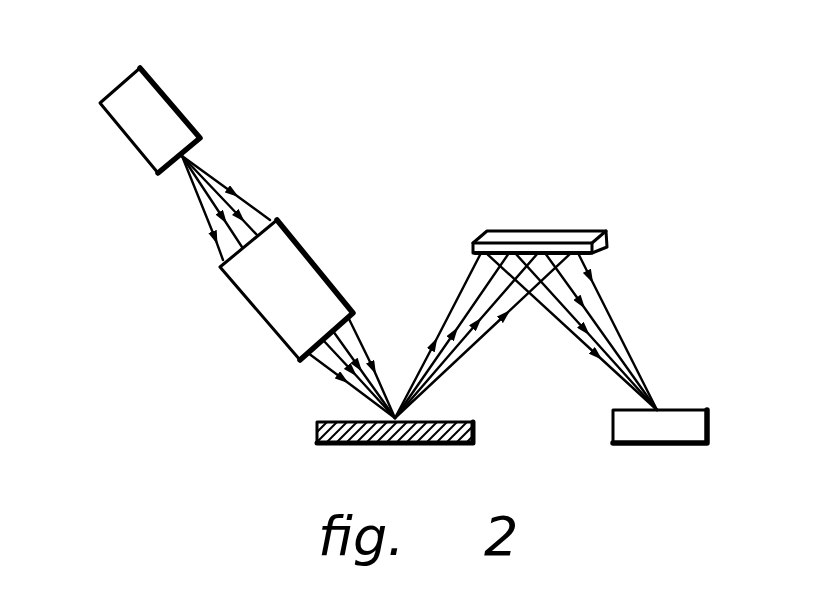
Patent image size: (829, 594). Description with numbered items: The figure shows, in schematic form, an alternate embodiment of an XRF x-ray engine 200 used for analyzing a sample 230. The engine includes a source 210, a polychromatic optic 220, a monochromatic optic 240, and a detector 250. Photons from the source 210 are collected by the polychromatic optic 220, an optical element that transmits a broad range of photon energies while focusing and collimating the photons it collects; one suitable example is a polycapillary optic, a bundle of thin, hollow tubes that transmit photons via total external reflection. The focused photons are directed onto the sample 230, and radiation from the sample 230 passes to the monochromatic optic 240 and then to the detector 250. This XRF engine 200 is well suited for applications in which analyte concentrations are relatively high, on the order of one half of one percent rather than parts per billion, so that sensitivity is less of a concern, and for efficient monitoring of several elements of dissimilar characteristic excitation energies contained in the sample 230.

The XRF x-ray engine 200 is at (430, 122).
The source 210 is at (180, 100).
The polychromatic optic 220 is at (306, 248).
The sample 230 is at (317, 433).
The monochromatic optic 240 is at (538, 228).
The detector 250 is at (613, 423).